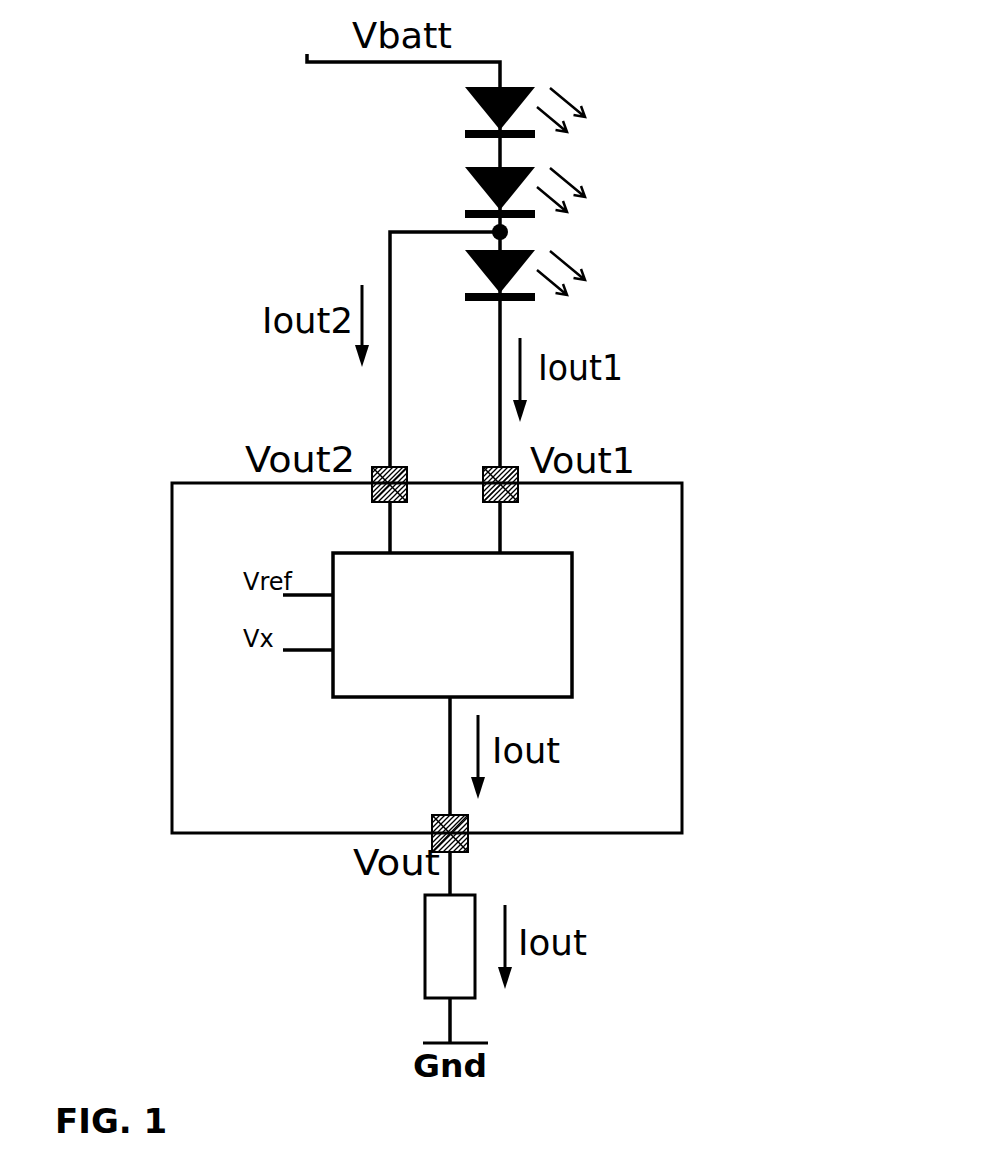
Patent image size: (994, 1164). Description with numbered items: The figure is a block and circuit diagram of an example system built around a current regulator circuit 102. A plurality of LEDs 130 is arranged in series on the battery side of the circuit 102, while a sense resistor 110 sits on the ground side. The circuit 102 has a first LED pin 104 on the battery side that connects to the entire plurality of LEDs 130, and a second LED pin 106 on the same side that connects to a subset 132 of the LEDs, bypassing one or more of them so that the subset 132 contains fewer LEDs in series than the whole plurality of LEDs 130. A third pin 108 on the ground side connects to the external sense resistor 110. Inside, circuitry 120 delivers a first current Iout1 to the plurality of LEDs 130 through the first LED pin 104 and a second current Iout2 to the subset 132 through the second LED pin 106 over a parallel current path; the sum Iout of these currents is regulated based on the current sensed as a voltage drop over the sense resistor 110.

The current regulator circuit 102 is at (682, 512).
The first LED pin 104 is at (518, 490).
The second LED pin 106 is at (372, 492).
The third pin 108 is at (468, 840).
The sense resistor 110 is at (425, 945).
The circuitry 120 is at (572, 592).
The plurality of LEDs 130 is at (535, 196).
The subset of the plurality of LEDs 132 is at (458, 75).